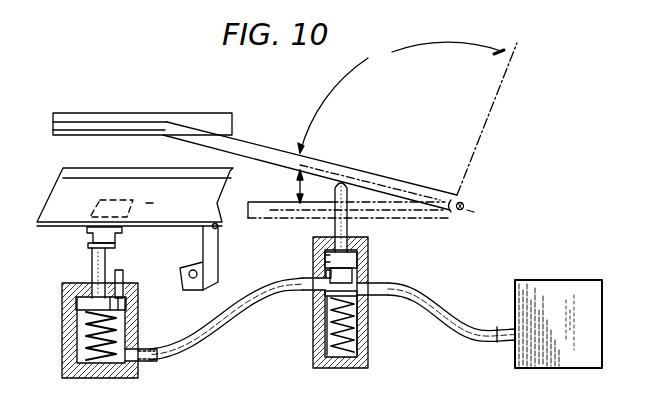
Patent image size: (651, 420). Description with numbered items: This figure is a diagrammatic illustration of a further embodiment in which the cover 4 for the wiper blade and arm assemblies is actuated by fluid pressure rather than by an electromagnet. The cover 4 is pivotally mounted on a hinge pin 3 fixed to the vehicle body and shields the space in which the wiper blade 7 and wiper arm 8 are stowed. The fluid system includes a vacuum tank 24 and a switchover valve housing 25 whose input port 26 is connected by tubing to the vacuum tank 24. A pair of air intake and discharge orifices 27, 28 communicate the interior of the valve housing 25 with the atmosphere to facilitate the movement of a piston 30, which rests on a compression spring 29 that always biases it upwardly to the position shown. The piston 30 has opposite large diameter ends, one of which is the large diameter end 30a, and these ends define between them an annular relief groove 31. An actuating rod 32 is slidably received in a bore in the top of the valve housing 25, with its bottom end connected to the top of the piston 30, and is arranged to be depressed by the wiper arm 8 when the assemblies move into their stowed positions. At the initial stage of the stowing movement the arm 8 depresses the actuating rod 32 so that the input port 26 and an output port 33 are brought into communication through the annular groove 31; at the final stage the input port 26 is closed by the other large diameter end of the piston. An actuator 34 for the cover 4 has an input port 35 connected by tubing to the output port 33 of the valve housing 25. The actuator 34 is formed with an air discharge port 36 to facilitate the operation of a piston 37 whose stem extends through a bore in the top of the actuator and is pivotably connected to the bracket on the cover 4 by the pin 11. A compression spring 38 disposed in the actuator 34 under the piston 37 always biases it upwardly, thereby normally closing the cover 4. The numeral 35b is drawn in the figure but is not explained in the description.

The hinge pin 3 is at (218, 229).
The cover 4 is at (58, 195).
The wiper blade 7 is at (183, 120).
The wiper arm 8 is at (255, 148).
The pin 11 is at (107, 252).
The vacuum tank 24 is at (550, 288).
The switchover valve housing 25 is at (372, 365).
The input port 26 is at (387, 280).
The air intake and discharge orifice 27 is at (363, 262).
The air intake and discharge orifice 28 is at (370, 325).
The compression spring 29 is at (330, 345).
The piston 30 is at (313, 338).
The large diameter end 30a is at (325, 300).
The annular relief groove 31 is at (317, 266).
The actuating rod 32 is at (347, 172).
The output port 33 is at (262, 287).
The actuator 34 is at (68, 328).
The input port 35 is at (150, 365).
The seal 35b is at (318, 256).
The air discharge port 36 is at (123, 278).
The piston 37 is at (127, 303).
The compression spring 38 is at (63, 365).